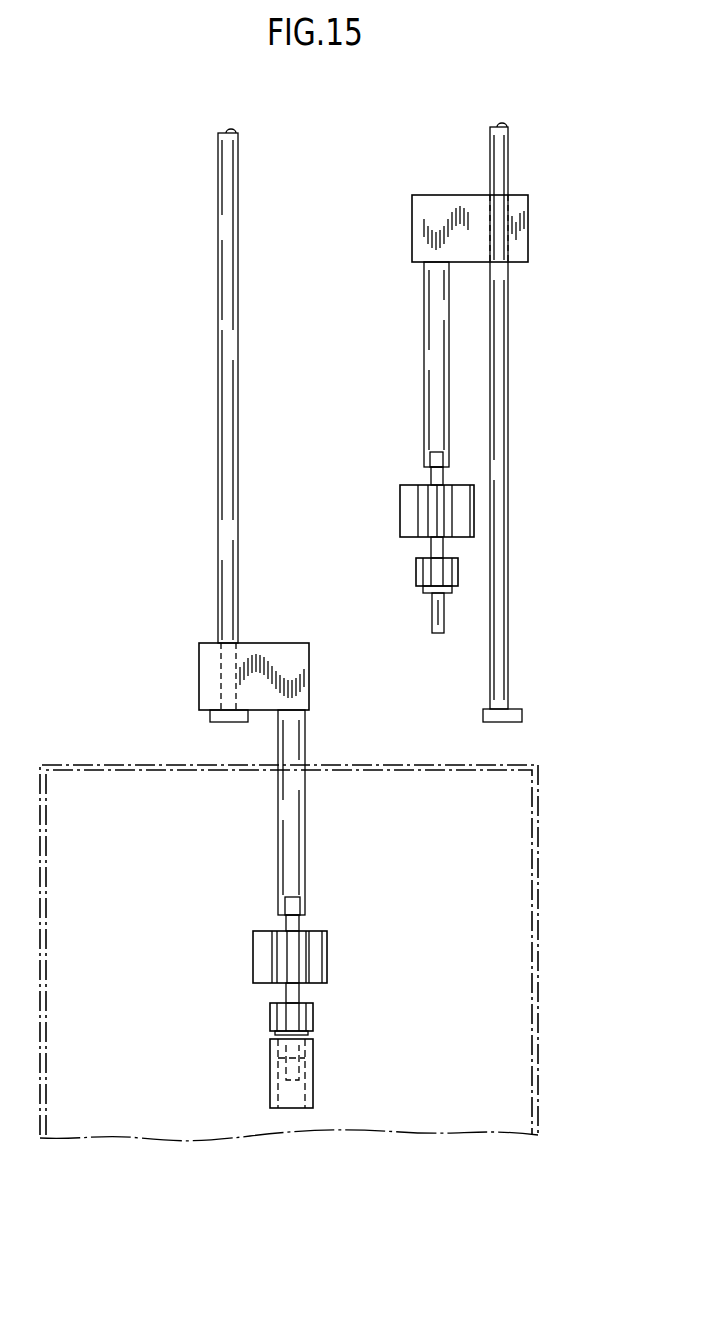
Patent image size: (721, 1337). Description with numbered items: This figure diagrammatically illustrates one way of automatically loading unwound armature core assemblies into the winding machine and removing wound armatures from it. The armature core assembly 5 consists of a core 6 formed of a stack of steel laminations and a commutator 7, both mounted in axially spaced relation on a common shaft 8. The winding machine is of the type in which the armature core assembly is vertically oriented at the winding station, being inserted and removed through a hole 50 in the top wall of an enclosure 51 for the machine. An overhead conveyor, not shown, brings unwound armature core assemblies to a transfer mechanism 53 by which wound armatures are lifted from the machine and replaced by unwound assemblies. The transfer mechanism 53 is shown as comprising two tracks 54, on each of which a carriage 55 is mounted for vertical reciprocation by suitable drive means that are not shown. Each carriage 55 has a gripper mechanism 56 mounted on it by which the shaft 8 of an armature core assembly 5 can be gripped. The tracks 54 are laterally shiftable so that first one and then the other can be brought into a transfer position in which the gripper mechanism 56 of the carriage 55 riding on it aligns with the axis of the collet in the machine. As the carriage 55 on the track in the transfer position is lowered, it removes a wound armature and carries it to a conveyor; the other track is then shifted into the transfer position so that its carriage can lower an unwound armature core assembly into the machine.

The armature core assembly 5 is at (392, 545).
The core 6 is at (410, 508).
The commutator 7 is at (423, 572).
The shaft 8 is at (432, 474).
The hole 50 is at (325, 765).
The enclosure 51 is at (538, 806).
The transfer mechanism 53 is at (377, 156).
The tracks 54 is at (230, 475).
The carriage 55 is at (522, 224).
The gripper mechanism 56 is at (428, 366).